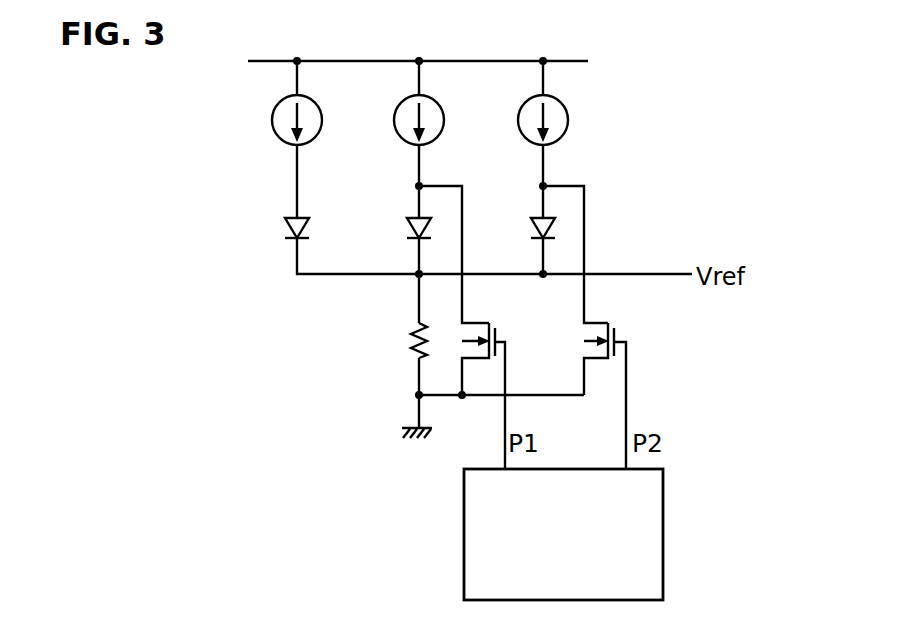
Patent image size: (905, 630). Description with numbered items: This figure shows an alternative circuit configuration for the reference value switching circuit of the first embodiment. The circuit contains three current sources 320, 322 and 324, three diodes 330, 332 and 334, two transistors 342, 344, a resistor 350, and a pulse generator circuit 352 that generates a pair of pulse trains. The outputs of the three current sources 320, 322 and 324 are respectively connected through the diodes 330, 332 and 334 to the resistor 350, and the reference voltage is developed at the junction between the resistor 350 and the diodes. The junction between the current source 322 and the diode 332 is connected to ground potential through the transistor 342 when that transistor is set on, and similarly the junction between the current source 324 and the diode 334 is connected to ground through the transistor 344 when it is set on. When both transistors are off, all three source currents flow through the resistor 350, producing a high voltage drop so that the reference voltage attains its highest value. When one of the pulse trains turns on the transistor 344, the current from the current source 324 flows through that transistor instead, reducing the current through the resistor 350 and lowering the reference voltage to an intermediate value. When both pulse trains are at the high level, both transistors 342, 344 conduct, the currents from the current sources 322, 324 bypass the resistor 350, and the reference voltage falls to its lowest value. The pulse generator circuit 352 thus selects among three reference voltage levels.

The current source 320 is at (347, 93).
The current source 322 is at (470, 93).
The current source 324 is at (592, 93).
The diode 330 is at (290, 217).
The diode 332 is at (413, 218).
The diode 334 is at (537, 218).
The transistor 342 is at (519, 307).
The transistor 344 is at (641, 307).
The resistor 350 is at (412, 340).
The pulse generator circuit 352 is at (665, 486).